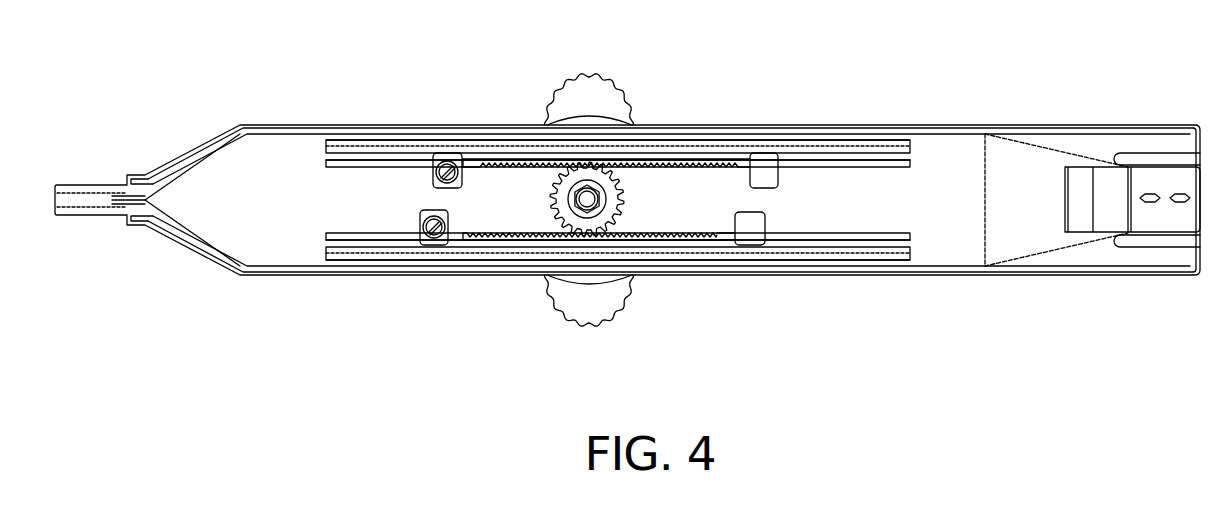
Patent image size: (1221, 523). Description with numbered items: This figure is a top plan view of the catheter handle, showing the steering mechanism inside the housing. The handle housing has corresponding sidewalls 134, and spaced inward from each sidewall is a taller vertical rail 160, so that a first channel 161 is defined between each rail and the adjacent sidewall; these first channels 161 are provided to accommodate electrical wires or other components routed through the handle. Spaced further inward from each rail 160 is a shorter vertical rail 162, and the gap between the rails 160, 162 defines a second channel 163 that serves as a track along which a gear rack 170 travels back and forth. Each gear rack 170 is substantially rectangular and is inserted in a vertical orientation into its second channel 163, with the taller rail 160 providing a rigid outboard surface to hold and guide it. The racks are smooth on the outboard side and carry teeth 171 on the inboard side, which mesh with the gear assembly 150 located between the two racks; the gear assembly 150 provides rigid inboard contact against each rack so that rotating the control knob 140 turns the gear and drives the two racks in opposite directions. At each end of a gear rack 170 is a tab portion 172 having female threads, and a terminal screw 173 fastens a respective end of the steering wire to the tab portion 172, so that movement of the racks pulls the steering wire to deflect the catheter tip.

The sidewall 134 is at (690, 125).
The control knob 140 is at (611, 293).
The gear assembly 150 is at (628, 202).
The first and third vertical rails 160 is at (795, 148).
The first channels 161 is at (825, 140).
The second and fourth vertical rails 162 is at (850, 163).
The second channels 163 is at (890, 157).
The gear rack 170 is at (606, 197).
The teeth 171 is at (537, 232).
The tab portion 172 is at (428, 143).
The terminal screw 173 is at (447, 165).